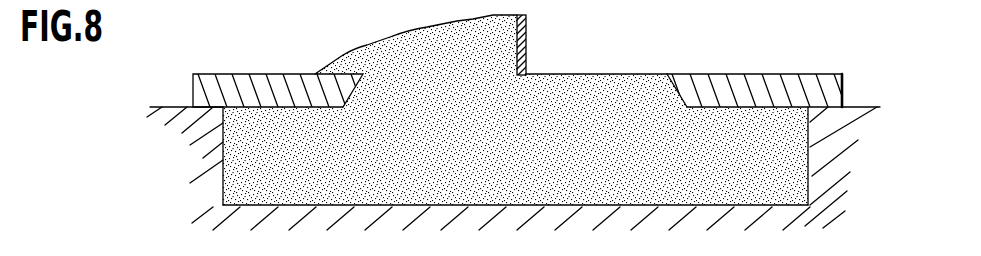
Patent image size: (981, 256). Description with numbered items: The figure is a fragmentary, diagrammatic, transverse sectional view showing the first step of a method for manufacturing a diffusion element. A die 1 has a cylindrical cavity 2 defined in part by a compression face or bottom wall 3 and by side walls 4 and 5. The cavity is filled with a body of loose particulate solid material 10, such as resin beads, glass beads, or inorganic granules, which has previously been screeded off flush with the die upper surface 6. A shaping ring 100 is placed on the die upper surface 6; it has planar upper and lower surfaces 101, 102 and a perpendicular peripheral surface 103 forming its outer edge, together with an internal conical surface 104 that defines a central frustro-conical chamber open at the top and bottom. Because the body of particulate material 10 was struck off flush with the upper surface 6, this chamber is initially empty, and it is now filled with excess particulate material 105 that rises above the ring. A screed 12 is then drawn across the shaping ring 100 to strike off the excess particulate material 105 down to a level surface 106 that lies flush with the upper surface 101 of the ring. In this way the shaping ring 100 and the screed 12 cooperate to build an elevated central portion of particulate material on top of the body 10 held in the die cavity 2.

The die 1 is at (208, 161).
The cylindrical cavity 2 is at (519, 177).
The compression face or bottom wall 3 is at (745, 207).
The side wall 4 is at (224, 181).
The side wall 5 is at (812, 174).
The upper surface 6 is at (863, 107).
The body of loose particulate solid material 10 is at (515, 104).
The screed 12 is at (527, 31).
The shaping ring 100 is at (764, 83).
The upper surface 101 is at (725, 73).
The lower surface 102 is at (828, 109).
The perpendicular peripheral surface 103 is at (843, 78).
The internal conical surface 104 is at (672, 88).
The excess particulate material 105 is at (425, 50).
The level surface 106 is at (563, 75).